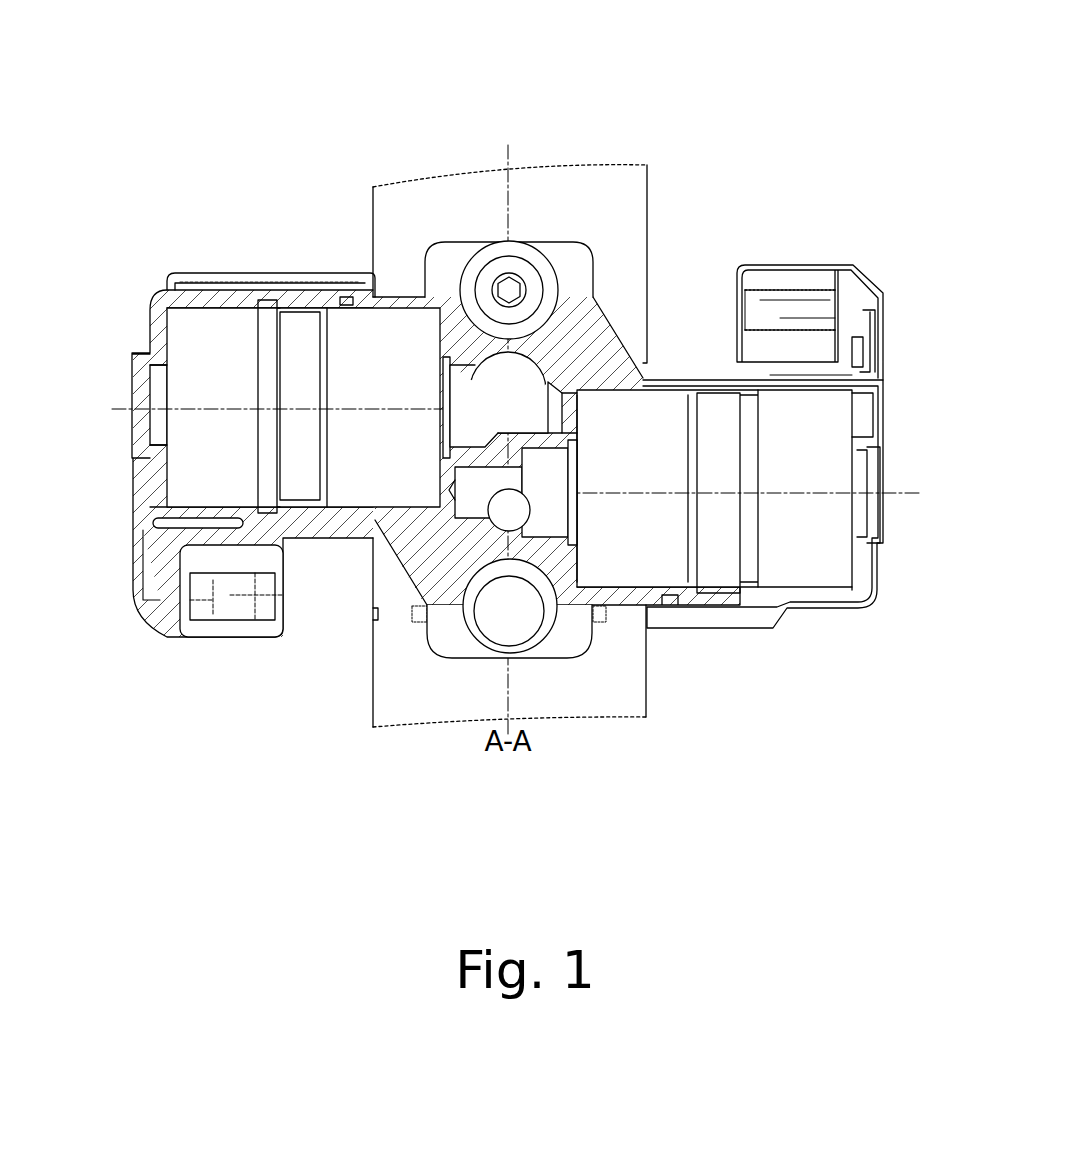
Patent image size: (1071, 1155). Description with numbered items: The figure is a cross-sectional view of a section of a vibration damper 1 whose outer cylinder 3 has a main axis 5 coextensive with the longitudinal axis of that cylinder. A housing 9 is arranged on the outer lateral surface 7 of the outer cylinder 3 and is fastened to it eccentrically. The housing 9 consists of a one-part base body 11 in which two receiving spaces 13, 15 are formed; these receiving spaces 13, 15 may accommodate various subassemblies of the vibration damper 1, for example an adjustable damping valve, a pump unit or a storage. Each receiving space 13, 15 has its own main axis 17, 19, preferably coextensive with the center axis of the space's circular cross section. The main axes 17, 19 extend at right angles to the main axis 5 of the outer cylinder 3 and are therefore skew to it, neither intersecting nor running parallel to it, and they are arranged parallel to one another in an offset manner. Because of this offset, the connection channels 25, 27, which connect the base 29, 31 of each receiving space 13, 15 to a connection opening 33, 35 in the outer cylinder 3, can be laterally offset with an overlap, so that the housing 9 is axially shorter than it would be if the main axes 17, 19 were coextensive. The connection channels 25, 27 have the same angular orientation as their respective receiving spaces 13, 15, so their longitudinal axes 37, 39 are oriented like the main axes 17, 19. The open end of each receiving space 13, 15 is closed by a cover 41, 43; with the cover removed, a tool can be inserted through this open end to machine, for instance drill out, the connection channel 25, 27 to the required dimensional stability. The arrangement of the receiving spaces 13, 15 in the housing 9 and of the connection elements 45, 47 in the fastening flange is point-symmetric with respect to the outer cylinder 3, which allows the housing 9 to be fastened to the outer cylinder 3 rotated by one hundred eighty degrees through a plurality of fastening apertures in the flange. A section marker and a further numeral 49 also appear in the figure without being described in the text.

The vibration damper 1 is at (718, 82).
The outer cylinder 3 is at (647, 182).
The main axis 5 is at (510, 146).
The outer lateral surface 7 is at (372, 711).
The housing 9 is at (705, 335).
The base body 11 is at (427, 548).
The receiving space 13 is at (215, 450).
The receiving space 15 is at (810, 432).
The main axis 17 is at (118, 407).
The main axis 19 is at (907, 494).
The connection channel 25 is at (463, 423).
The connection channel 27 is at (555, 513).
The base 29 is at (447, 475).
The base 31 is at (572, 427).
The connection opening 33 is at (523, 373).
The connection opening 35 is at (503, 518).
The longitudinal axis 37 is at (550, 380).
The longitudinal axis 39 is at (600, 493).
The cover 41 is at (140, 507).
The cover 43 is at (880, 335).
The connection element 45 is at (520, 615).
The connection element 47 is at (490, 282).
The lower boss 49 is at (447, 645).